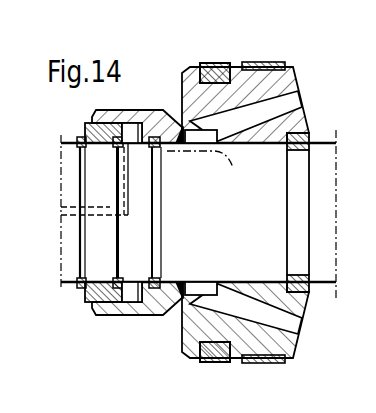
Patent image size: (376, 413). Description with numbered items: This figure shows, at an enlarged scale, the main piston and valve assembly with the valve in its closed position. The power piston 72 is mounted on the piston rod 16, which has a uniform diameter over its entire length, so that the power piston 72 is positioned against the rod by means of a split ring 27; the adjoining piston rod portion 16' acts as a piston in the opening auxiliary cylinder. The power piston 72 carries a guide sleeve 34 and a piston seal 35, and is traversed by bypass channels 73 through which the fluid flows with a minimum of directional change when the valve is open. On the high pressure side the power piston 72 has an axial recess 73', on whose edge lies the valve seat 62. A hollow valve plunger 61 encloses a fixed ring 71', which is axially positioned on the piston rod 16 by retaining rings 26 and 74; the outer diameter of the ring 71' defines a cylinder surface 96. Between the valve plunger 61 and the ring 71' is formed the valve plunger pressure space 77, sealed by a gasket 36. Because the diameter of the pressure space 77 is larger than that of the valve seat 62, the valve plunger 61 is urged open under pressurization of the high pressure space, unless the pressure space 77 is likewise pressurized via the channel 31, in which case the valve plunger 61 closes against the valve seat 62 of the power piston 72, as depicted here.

The piston rod 16 is at (49, 212).
The piston rod portion 16' is at (326, 196).
The retaining ring 26 is at (80, 288).
The split ring 27 is at (312, 288).
The channel 31 is at (104, 210).
The guide sleeve 34 is at (282, 62).
The piston seal 35 is at (215, 63).
The gasket 36 is at (201, 177).
The hollow valve plunger 61 is at (165, 314).
The valve seat 62 is at (179, 130).
The fixed ring 71' is at (99, 246).
The power piston 72 is at (249, 76).
The bypass channels 73 is at (274, 100).
The axial recess 73' is at (246, 284).
The retaining ring 74 is at (120, 260).
The valve plunger pressure space 77 is at (140, 145).
The cylinder surface 96 is at (112, 302).